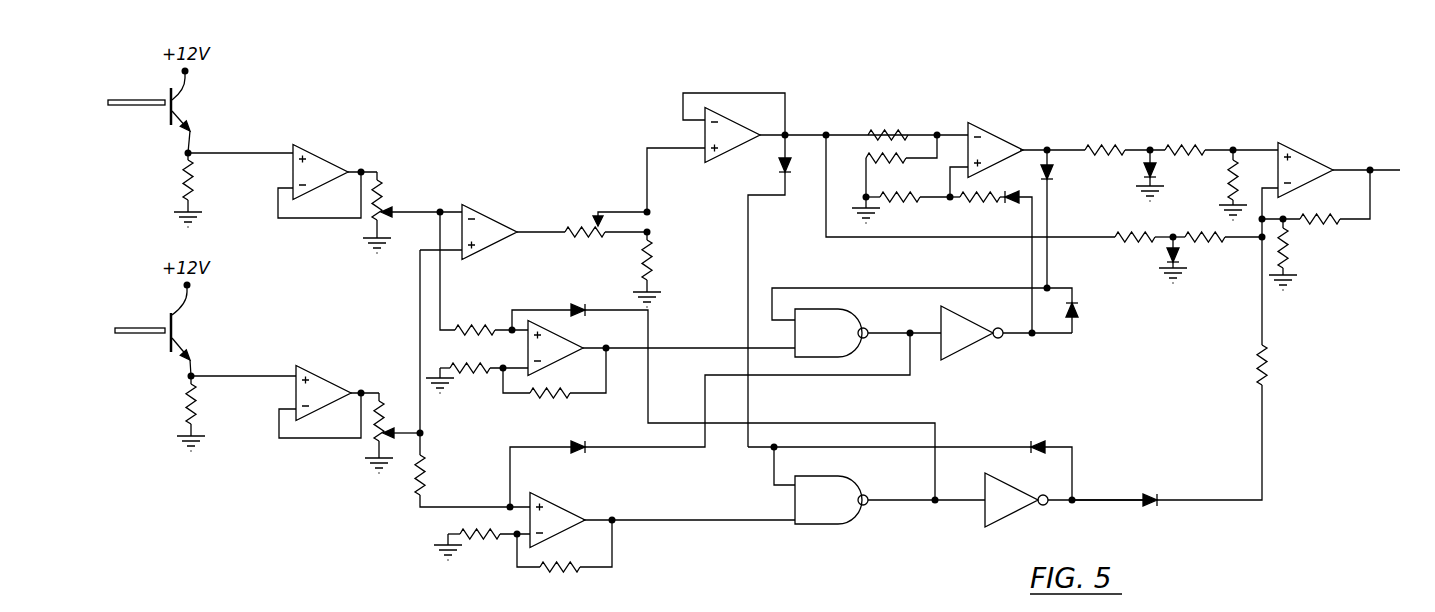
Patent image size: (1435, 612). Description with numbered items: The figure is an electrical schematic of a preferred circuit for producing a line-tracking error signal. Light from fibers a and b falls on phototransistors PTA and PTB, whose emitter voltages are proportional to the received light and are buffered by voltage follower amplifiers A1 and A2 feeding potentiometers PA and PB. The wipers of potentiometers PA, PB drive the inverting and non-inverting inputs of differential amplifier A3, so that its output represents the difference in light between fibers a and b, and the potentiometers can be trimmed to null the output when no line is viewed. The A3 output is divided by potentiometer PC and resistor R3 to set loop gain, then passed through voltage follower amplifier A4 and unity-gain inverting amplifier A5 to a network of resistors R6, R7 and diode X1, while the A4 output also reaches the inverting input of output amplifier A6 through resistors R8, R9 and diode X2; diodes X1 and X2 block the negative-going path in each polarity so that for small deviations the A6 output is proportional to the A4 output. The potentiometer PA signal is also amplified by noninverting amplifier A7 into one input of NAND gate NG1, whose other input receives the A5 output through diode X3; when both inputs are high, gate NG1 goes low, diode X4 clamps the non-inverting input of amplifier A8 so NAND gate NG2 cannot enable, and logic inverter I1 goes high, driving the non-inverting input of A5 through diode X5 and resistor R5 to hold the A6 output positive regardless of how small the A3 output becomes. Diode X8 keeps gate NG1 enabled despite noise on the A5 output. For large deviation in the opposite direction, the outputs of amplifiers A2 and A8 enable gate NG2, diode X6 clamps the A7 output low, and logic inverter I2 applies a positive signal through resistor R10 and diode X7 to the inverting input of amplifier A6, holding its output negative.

The fiber a is at (138, 100).
The fiber b is at (144, 328).
The phototransistor PTA is at (190, 111).
The phototransistor PTB is at (191, 329).
The voltage follower amplifier A1 is at (322, 162).
The voltage follower amplifier A2 is at (325, 384).
The differential amplifier A3 is at (490, 224).
The voltage follower amplifier A4 is at (725, 143).
The unity-gain inverting amplifier A5 is at (999, 142).
The output amplifier A6 is at (1305, 164).
The noninverting amplifier A7 is at (557, 346).
The amplifier A8 is at (566, 517).
The potentiometer PA is at (401, 212).
The potentiometer PB is at (392, 433).
The potentiometer PC is at (608, 235).
The resistor R3 is at (656, 269).
The resistor R5 is at (977, 206).
The resistor R6 is at (1125, 137).
The resistor R7 is at (1221, 137).
The resistor R8 is at (1150, 224).
The resistor R9 is at (1223, 224).
The resistor R10 is at (1212, 368).
The diode X1 is at (1160, 175).
The diode X2 is at (1183, 260).
The diode X3 is at (1061, 219).
The diode X4 is at (710, 420).
The diode X5 is at (1014, 262).
The diode X6 is at (723, 392).
The diode X7 is at (1115, 489).
The diode X8 is at (1076, 310).
The NAND gate NG1 is at (828, 321).
The NAND gate NG2 is at (910, 484).
The logic inverter I1 is at (969, 330).
The logic inverter I2 is at (1006, 493).